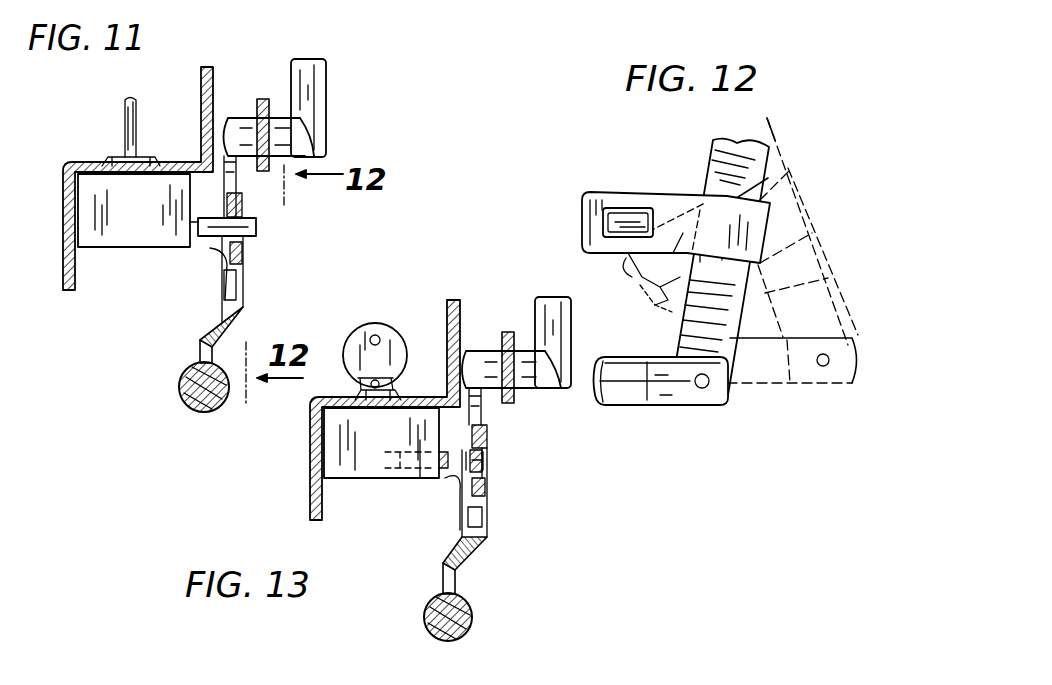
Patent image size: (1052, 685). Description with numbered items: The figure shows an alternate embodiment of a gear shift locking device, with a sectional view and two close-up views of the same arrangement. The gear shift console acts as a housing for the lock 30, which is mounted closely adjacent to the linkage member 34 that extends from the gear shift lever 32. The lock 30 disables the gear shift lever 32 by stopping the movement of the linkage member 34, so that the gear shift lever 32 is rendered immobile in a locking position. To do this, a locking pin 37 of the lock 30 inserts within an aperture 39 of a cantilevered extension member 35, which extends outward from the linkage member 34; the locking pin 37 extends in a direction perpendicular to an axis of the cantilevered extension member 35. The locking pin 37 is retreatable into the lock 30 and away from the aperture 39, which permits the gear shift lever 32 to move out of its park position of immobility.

In FIG. 11, the lock 30 is at (113, 230).
In FIG. 13, the lock 30 is at (363, 470).
In FIG. 11, the gear shift lever 32 is at (330, 92).
In FIG. 13, the gear shift lever 32 is at (516, 350).
In FIG. 11, the linkage member 34 is at (246, 286).
In FIG. 12, the linkage member 34 is at (735, 333).
In FIG. 13, the linkage member 34 is at (488, 512).
In FIG. 11, the cantilevered extension member 35 is at (212, 262).
In FIG. 12, the cantilevered extension member 35 is at (663, 196).
In FIG. 13, the cantilevered extension member 35 is at (458, 492).
In FIG. 11, the locking pin 37 is at (213, 236).
In FIG. 12, the locking pin 37 is at (616, 223).
In FIG. 13, the locking pin 37 is at (447, 472).
In FIG. 12, the aperture 39 is at (632, 210).
In FIG. 13, the aperture 39 is at (493, 467).